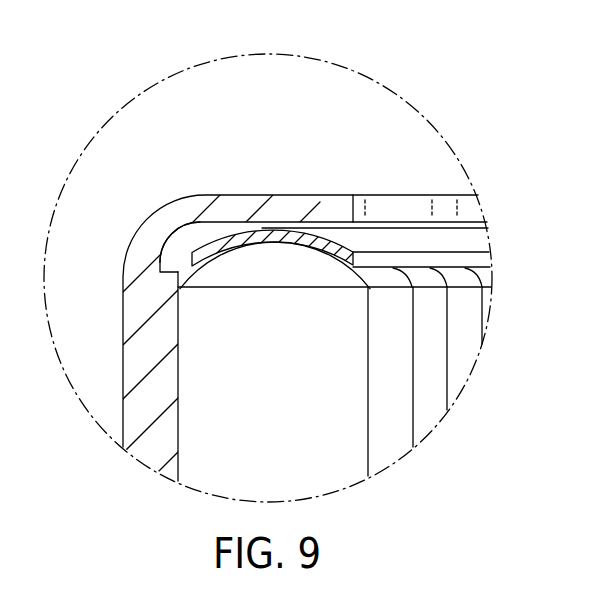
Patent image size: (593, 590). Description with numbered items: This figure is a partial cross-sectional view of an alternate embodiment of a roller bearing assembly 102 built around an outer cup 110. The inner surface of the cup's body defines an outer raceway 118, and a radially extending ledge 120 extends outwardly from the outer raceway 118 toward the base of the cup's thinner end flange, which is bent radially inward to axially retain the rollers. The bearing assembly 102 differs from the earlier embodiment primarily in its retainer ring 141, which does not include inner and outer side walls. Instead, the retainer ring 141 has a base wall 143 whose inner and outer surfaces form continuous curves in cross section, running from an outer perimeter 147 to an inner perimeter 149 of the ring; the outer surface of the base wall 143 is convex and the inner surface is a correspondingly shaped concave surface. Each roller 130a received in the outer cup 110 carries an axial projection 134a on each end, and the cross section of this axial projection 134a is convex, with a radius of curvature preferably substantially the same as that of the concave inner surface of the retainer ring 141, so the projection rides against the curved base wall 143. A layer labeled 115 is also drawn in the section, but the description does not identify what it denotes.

The roller bearing assembly 102 is at (273, 76).
The outer cup 110 is at (101, 408).
The top wall 115 is at (222, 222).
The outer raceway 118 is at (163, 467).
The radially extending ledge 120 is at (150, 262).
The roller 130a is at (370, 442).
The axial projection 134a is at (265, 273).
The retainer ring 141 is at (190, 236).
The base wall 143 is at (357, 242).
The outer perimeter 147 is at (160, 255).
The inner perimeter 149 is at (430, 258).